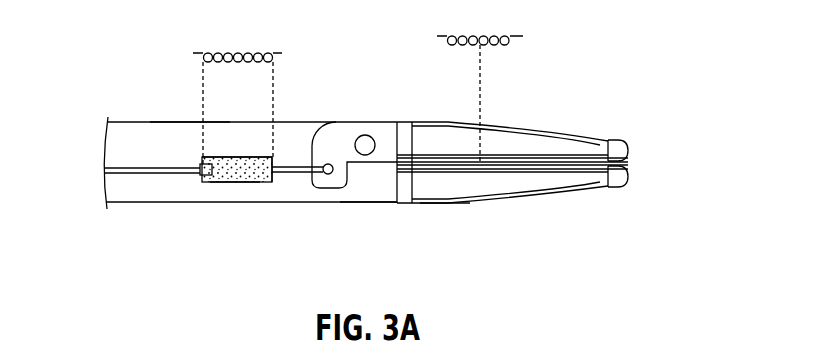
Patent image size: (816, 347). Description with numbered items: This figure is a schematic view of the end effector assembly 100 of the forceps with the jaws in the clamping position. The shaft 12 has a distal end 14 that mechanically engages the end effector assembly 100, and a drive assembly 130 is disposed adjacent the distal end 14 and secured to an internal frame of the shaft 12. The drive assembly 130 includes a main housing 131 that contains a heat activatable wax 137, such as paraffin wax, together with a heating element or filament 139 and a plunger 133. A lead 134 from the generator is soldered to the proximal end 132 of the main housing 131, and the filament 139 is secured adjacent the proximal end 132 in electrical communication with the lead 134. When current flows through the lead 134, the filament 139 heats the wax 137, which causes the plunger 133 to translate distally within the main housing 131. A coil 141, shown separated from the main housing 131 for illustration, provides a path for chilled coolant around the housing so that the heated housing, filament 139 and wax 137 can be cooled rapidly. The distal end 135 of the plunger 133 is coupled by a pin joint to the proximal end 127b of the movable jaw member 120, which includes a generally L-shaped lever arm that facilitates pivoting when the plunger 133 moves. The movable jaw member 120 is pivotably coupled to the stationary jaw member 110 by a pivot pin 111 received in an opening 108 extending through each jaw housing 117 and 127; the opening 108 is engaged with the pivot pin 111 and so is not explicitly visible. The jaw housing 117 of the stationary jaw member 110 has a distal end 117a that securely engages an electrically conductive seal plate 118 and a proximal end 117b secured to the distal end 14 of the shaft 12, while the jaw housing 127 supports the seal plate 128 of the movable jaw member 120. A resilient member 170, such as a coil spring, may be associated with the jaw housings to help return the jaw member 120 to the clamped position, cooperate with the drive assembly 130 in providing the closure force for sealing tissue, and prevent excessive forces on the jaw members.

The end effector assembly 100 is at (593, 44).
The shaft 12 is at (123, 122).
The distal end 14 is at (190, 122).
The lead 134 is at (118, 167).
The proximal end 132 is at (203, 183).
The heating element or filament 139 is at (203, 157).
The heat activatable wax 137 is at (233, 184).
The main housing 131 is at (263, 183).
The coil 141 is at (222, 50).
The drive assembly 130 is at (241, 146).
The plunger 133 is at (278, 165).
The distal end 135 is at (327, 176).
The proximal end 127b is at (348, 122).
The pivot pin 111 is at (368, 135).
The opening 108 is at (372, 163).
The proximal end 117b is at (368, 203).
The jaw housing 127 is at (526, 131).
The jaw housing 117 is at (543, 194).
The distal end 117a is at (452, 203).
The jaw member 120 is at (618, 140).
The seal plate 128 is at (618, 163).
The seal plate 118 is at (622, 166).
The jaw member 110 is at (621, 189).
The resilient member 170 is at (483, 34).